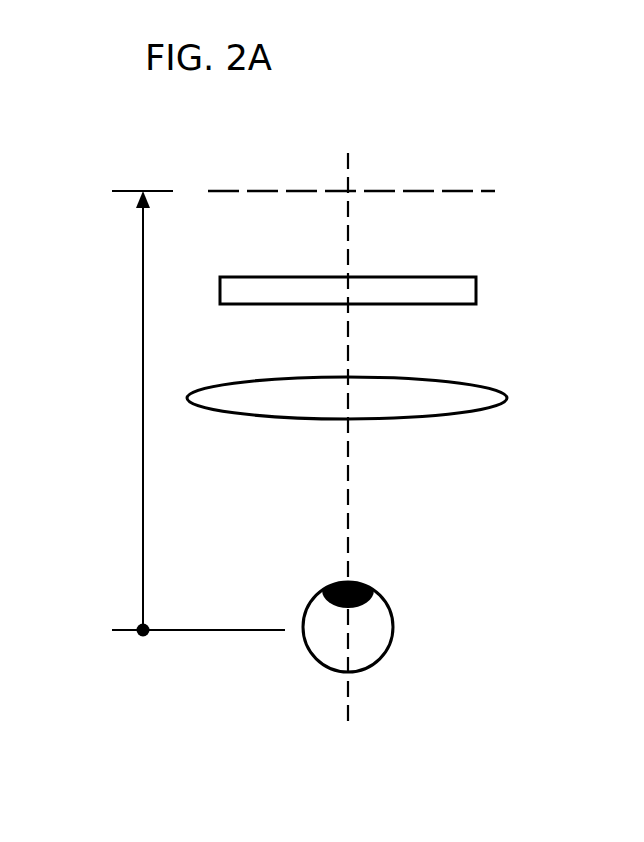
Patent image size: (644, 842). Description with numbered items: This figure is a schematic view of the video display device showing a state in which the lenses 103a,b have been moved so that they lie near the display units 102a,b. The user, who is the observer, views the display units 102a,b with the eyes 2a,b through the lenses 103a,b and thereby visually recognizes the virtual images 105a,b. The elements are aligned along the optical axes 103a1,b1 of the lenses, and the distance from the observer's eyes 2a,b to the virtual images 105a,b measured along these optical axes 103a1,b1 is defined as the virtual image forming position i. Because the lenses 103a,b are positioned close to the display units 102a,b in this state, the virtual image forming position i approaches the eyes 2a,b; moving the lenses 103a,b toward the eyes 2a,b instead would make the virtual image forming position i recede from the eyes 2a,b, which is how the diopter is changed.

The virtual images 105a,b is at (452, 193).
The display units 102a,b is at (452, 305).
The lenses 103a,b is at (451, 418).
The optical axes 103a1,b1 is at (348, 703).
The eyes 2a,b is at (388, 647).
The virtual image forming position i is at (198, 414).